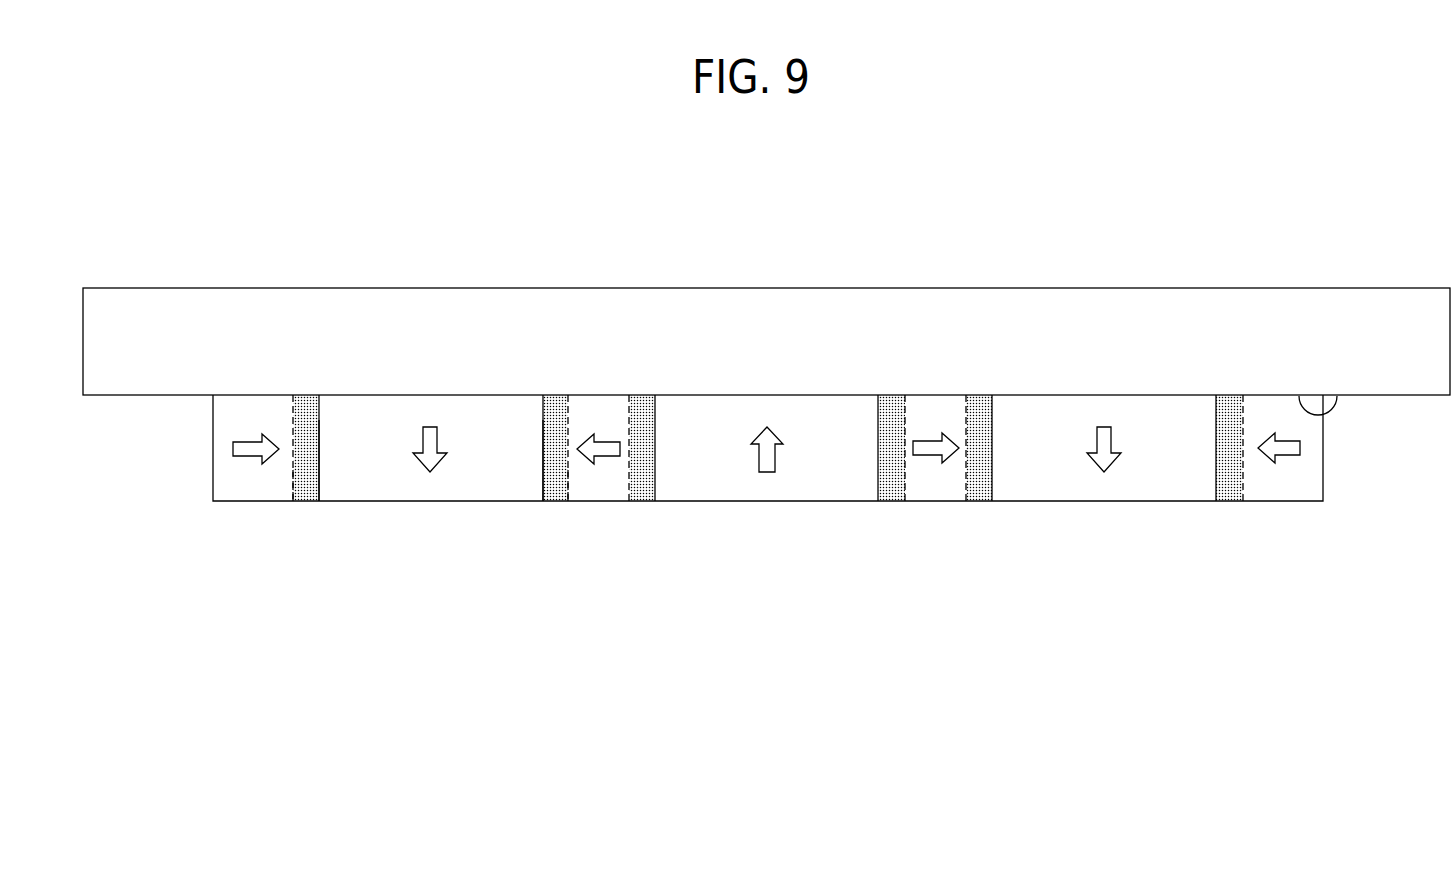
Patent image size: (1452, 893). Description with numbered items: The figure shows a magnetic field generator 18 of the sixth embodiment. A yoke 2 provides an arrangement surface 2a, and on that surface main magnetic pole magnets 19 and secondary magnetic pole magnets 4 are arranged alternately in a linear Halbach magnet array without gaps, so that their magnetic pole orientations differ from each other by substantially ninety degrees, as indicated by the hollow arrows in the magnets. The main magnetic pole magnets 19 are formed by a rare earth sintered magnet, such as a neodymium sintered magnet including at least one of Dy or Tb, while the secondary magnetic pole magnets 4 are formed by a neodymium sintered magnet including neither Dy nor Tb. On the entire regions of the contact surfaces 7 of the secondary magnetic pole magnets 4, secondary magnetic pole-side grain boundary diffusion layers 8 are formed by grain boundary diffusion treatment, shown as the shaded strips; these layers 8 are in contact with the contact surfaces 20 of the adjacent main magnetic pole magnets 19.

The yoke 2 is at (768, 330).
The arrangement surface 2a is at (1338, 397).
The secondary magnetic pole magnet 4 is at (237, 483).
The contact surface 7 is at (319, 449).
The secondary magnetic pole-side grain boundary diffusion layer 8 is at (305, 410).
The magnetic field generator 18 is at (1116, 275).
The main magnetic pole magnet 19 is at (434, 483).
The contact surface 20 is at (318, 472).